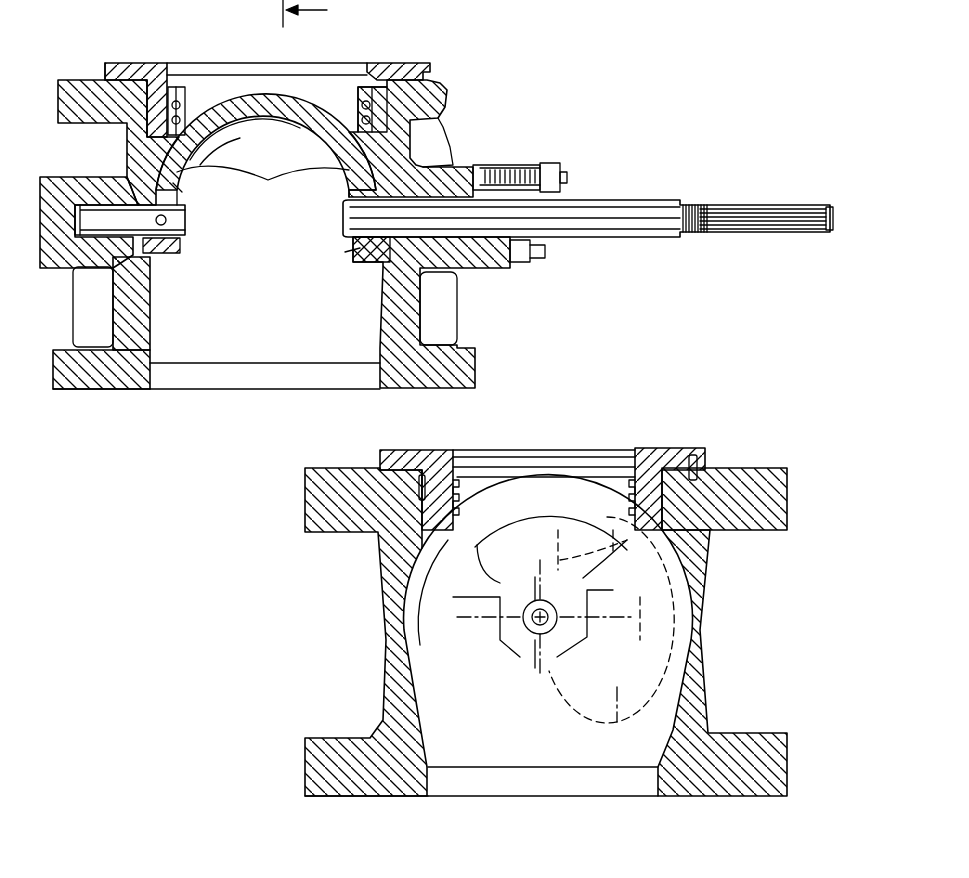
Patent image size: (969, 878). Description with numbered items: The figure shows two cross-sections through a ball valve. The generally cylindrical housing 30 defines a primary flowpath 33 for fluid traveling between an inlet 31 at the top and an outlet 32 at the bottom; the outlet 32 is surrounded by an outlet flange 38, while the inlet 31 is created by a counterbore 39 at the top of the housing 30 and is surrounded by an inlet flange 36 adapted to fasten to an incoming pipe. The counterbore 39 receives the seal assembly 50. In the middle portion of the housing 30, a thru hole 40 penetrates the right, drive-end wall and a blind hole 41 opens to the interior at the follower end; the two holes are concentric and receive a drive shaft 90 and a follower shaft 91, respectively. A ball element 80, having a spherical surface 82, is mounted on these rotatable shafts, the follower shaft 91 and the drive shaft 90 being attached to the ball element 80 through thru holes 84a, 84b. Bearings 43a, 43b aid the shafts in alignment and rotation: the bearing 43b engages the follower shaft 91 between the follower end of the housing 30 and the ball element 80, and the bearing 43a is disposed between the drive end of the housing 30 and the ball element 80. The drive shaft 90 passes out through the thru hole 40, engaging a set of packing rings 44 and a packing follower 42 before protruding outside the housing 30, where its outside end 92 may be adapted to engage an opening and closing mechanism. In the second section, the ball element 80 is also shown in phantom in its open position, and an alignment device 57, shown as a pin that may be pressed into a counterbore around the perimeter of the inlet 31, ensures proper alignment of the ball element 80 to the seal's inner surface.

In FIG. 2, the housing 30 is at (450, 368).
In FIG. 3, the housing 30 is at (322, 765).
In FIG. 2, the inlet 31 is at (425, 254).
In FIG. 3, the inlet 31 is at (499, 615).
In FIG. 2, the outlet 32 is at (223, 407).
In FIG. 3, the outlet 32 is at (543, 812).
In FIG. 2, the primary flowpath 33 is at (228, 268).
In FIG. 3, the primary flowpath 33 is at (483, 672).
In FIG. 2, the inlet flange 36 is at (62, 80).
In FIG. 3, the inlet flange 36 is at (780, 458).
In FIG. 2, the outlet flange 38 is at (127, 392).
In FIG. 3, the outlet flange 38 is at (403, 810).
In FIG. 2, the counterbore 39 is at (363, 120).
In FIG. 2, the thru hole 40 is at (457, 280).
In FIG. 2, the blind hole 41 is at (67, 220).
In FIG. 2, the packing follower 42 is at (557, 255).
In FIG. 2, the bearing 43a is at (397, 272).
In FIG. 2, the bearing 43b is at (140, 260).
In FIG. 2, the packing rings 44 is at (465, 175).
In FIG. 2, the seal assembly 50 is at (393, 62).
In FIG. 3, the seal assembly 50 is at (670, 438).
In FIG. 3, the alignment device 57 is at (697, 465).
In FIG. 2, the ball element 80 is at (173, 183).
In FIG. 3, the ball element 80 is at (462, 577).
In FIG. 3, the spherical surface 82 is at (507, 490).
In FIG. 2, the thru hole 84a is at (213, 167).
In FIG. 2, the thru hole 84b is at (343, 252).
In FIG. 2, the drive shaft 90 is at (625, 240).
In FIG. 2, the follower shaft 91 is at (68, 263).
In FIG. 2, the outside end 92 is at (832, 240).